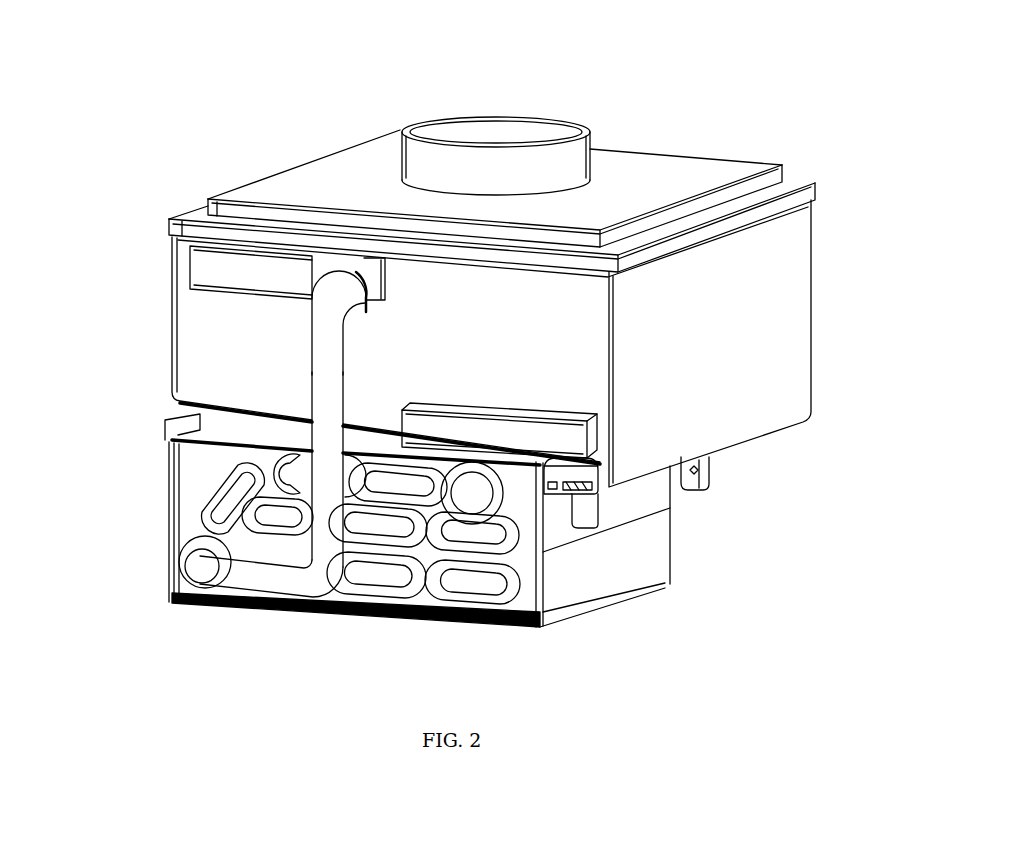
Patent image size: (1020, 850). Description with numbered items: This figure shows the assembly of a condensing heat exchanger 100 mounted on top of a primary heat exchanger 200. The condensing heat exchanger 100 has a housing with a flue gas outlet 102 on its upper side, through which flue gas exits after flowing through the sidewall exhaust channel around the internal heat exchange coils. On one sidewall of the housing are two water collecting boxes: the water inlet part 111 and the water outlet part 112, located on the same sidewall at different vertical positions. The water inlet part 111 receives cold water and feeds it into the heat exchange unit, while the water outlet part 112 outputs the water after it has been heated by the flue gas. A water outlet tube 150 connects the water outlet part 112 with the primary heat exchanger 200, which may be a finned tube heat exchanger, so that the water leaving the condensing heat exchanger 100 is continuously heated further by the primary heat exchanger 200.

The condensing heat exchanger 100 is at (728, 312).
The flue gas outlet 102 is at (490, 133).
The water inlet part 111 is at (527, 432).
The water outlet part 112 is at (252, 268).
The water outlet tube 150 is at (326, 378).
The primary heat exchanger 200 is at (600, 542).